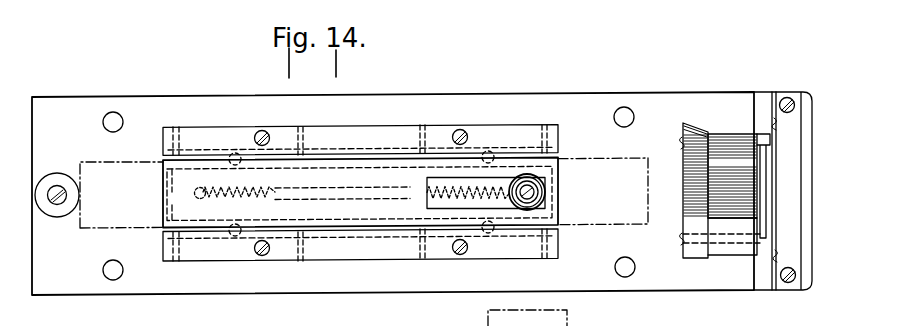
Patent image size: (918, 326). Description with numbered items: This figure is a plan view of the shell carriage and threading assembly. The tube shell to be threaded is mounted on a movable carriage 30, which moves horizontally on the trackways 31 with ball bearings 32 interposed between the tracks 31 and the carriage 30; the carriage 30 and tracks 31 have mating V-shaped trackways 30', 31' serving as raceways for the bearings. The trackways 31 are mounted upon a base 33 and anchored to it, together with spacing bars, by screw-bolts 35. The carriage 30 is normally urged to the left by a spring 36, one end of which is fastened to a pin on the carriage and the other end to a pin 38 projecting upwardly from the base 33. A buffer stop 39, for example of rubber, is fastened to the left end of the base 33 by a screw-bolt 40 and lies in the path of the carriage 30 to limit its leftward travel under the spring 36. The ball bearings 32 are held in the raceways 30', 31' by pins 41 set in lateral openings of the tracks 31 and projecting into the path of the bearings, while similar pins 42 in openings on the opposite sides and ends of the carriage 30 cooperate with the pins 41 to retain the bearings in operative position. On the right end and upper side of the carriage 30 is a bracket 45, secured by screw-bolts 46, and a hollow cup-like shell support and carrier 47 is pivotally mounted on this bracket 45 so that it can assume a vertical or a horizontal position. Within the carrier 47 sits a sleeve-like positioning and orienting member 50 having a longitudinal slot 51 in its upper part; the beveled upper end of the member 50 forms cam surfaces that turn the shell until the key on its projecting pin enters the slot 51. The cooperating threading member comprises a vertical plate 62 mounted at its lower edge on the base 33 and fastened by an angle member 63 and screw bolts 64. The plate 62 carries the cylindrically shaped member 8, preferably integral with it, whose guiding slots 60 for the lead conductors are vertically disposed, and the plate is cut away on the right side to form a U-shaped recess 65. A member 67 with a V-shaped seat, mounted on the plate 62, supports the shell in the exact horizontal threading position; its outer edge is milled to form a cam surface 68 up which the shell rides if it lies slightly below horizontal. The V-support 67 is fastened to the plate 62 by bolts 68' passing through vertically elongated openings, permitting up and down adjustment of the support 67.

The cylindrically shaped member 8 is at (710, 197).
The movable carriage 30 is at (360, 165).
The V-shaped trackway 30' is at (359, 193).
The trackway 31 is at (360, 191).
The V-shaped trackway 31' is at (360, 192).
The ball bearing 32 is at (236, 152).
The base 33 is at (85, 285).
The screw-bolt 35 is at (458, 131).
The spring 36 is at (263, 203).
The pin 38 is at (200, 189).
The buffer stop 39 is at (80, 192).
The screw-bolt 40 is at (56, 188).
The pin 41 is at (305, 137).
The pin 42 is at (185, 252).
The bracket 45 is at (437, 181).
The screw-bolt 46 is at (427, 207).
The shell support and carrier 47 is at (530, 178).
The positioning and orienting member 50 is at (535, 185).
The longitudinal slot 51 is at (538, 192).
The guiding slot 60 is at (710, 212).
The vertical plate 62 is at (765, 278).
The angle member 63 is at (779, 91).
The screw bolt 64 is at (787, 99).
The U-shaped recess 65 is at (763, 178).
The V-support 67 is at (695, 121).
The cam surface 68 is at (669, 153).
The bolt 68' is at (701, 245).